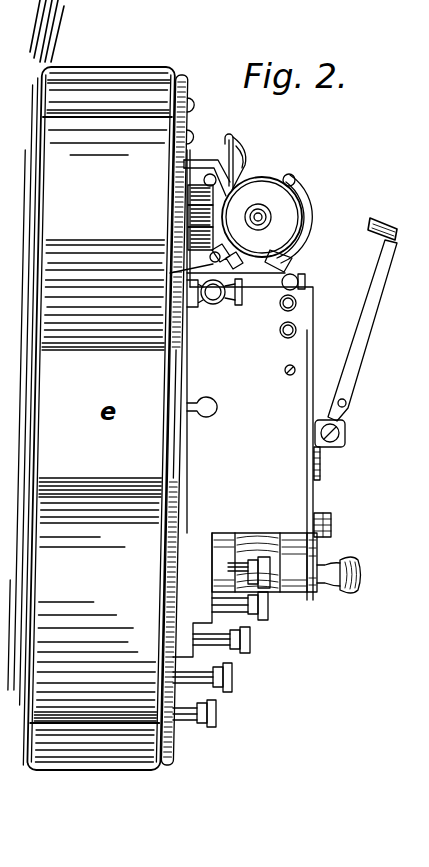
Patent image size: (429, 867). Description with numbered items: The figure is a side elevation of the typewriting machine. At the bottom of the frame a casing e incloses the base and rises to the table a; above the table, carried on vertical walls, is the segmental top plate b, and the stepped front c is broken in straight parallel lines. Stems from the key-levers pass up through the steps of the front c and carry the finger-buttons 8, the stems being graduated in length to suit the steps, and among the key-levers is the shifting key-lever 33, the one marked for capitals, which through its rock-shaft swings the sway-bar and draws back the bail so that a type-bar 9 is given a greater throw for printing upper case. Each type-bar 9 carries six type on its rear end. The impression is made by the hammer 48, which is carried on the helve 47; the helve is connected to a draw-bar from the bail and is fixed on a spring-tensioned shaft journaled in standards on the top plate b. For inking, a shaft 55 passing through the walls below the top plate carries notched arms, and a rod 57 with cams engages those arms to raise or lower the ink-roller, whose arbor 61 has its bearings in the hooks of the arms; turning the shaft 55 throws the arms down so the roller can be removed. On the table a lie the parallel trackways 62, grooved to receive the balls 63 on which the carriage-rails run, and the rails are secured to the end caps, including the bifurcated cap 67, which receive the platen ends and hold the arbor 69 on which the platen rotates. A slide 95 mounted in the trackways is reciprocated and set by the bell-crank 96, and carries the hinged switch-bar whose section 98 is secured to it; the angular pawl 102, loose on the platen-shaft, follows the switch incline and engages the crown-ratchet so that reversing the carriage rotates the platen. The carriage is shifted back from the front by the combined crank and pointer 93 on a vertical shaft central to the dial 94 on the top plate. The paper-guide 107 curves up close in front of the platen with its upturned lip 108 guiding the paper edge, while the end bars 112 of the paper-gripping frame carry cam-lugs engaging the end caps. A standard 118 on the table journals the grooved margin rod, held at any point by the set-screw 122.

The trackways 62 is at (190, 172).
The balls 63 is at (185, 185).
The switch-bar section 98 is at (186, 198).
The angular pawl 102 is at (186, 214).
The slide 95 is at (186, 240).
The paper-guide 107 is at (250, 155).
The upturned lip 108 is at (258, 163).
The cap 67 is at (262, 217).
The arbor 69 is at (262, 217).
The end bars 112 is at (304, 223).
The impression-hammer 48 is at (382, 217).
The helve 47 is at (357, 343).
The arbor 61 is at (298, 276).
The type-bar 9 is at (306, 283).
The rod 57 is at (297, 303).
The shaft 55 is at (297, 330).
The standard 118 is at (214, 304).
The set-screw 122 is at (247, 298).
The bell-crank 96 is at (202, 395).
The dial 94 is at (322, 470).
The combined crank and pointer 93 is at (334, 512).
The finger-button 8 is at (233, 640).
The key-lever 33 is at (210, 713).
The table a is at (195, 341).
The top plate b is at (250, 436).
The front c is at (192, 595).
The casing e is at (90, 418).